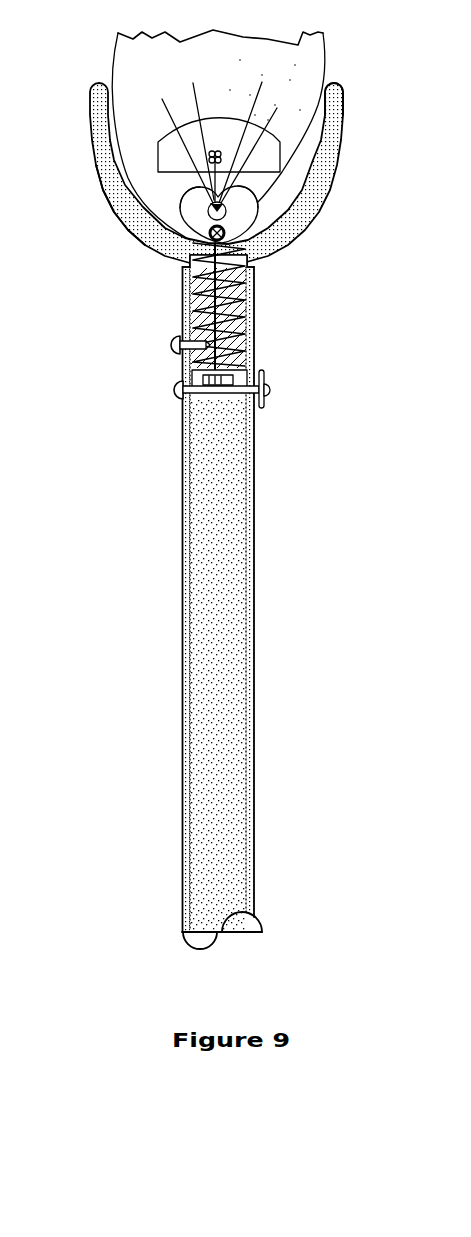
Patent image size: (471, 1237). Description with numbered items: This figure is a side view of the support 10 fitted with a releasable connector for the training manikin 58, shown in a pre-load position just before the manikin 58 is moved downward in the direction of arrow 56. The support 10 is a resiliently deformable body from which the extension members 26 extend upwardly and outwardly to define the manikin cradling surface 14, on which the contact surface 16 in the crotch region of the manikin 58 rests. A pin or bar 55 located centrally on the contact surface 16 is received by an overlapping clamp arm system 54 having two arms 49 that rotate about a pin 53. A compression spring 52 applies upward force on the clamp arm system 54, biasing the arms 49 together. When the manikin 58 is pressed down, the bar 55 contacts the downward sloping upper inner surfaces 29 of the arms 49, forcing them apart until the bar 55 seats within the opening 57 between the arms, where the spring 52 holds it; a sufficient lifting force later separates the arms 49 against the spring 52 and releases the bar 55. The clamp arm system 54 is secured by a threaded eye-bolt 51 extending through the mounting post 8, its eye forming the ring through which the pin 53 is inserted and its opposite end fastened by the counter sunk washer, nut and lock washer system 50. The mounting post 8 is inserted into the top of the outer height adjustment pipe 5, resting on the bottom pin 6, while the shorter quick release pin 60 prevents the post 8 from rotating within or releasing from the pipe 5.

The outer height adjustment pipe 5 is at (210, 452).
The bottom pin 6 is at (193, 392).
The mounting post 8 is at (197, 295).
The support 10 is at (138, 221).
The manikin cradling surface 14 is at (165, 222).
The contact surface 16 is at (157, 167).
The extension members 26 is at (335, 103).
The downward sloping upper inner surfaces 29 is at (218, 146).
The arm 49 is at (190, 212).
The counter sunk washer and threaded nut and lock washer system 50 is at (237, 385).
The threaded eye-bolt 51 is at (243, 348).
The compression spring 52 is at (242, 288).
The pin 53 is at (228, 238).
The overlapping clamp arm system 54 is at (256, 193).
The pin 55 is at (191, 141).
The arrow 56 is at (256, 137).
The opening 57 is at (224, 210).
The training manikin 58 is at (293, 63).
The quick release pin 60 is at (167, 347).